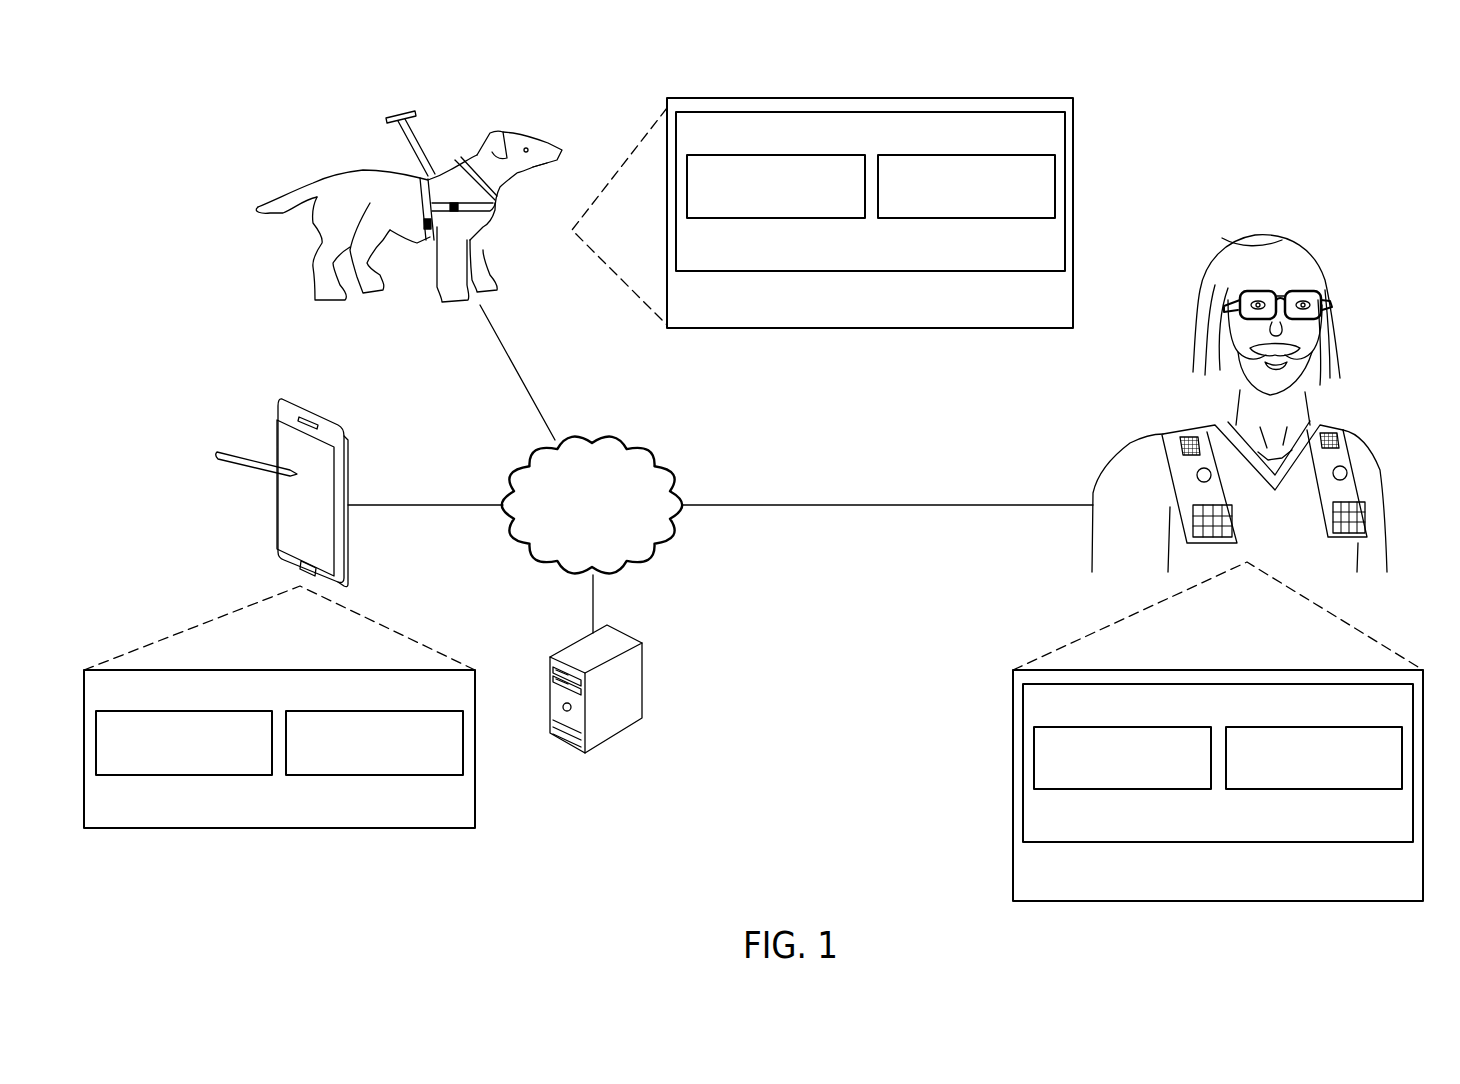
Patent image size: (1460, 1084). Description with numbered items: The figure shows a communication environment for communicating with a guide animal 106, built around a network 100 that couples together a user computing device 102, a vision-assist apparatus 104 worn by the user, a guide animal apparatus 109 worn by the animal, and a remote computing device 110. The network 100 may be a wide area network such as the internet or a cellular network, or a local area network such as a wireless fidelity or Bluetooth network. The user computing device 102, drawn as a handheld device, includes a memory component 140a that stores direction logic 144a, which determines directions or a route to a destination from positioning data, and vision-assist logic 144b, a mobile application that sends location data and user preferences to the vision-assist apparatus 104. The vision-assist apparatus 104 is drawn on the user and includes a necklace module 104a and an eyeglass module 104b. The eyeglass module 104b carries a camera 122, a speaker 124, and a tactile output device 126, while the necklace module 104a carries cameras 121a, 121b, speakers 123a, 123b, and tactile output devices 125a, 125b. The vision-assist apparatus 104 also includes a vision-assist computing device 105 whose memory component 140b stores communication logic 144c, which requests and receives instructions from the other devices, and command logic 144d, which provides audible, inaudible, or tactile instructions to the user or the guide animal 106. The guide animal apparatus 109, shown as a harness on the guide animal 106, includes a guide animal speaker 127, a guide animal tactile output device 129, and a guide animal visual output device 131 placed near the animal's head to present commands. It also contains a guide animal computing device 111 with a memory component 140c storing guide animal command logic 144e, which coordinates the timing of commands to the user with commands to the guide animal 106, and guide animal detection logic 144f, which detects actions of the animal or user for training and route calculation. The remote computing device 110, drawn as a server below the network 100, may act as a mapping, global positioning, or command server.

The network 100 is at (660, 460).
The user computing device 102 is at (352, 462).
The vision-assist apparatus 104 is at (1370, 230).
The necklace module 104a is at (1227, 296).
The eyeglass module 104b is at (1350, 493).
The vision-assist computing device 105 is at (1192, 901).
The guide animal 106 is at (300, 128).
The guide animal apparatus 109 is at (467, 165).
The remote computing device 110 is at (631, 640).
The guide animal computing device 111 is at (845, 328).
The camera 121a is at (1183, 440).
The camera 121b is at (1338, 438).
The camera 122 is at (1290, 292).
The speaker 123a is at (1196, 475).
The speaker 123b is at (1347, 473).
The speaker 124 is at (1222, 312).
The tactile output device 125a is at (1193, 523).
The tactile output device 125b is at (1353, 518).
The tactile output device 126 is at (1325, 305).
The guide animal speaker 127 is at (427, 238).
The guide animal tactile output device 129 is at (463, 205).
The guide animal visual output device 131 is at (515, 132).
The memory component 140a is at (286, 828).
The memory component 140b is at (1357, 842).
The memory component 140c is at (1013, 271).
The direction logic 144a is at (179, 775).
The vision-assist logic 144b is at (372, 775).
The communication logic 144c is at (1118, 789).
The command logic 144d is at (1312, 789).
The guide animal command logic 144e is at (773, 218).
The guide animal detection logic 144f is at (965, 218).